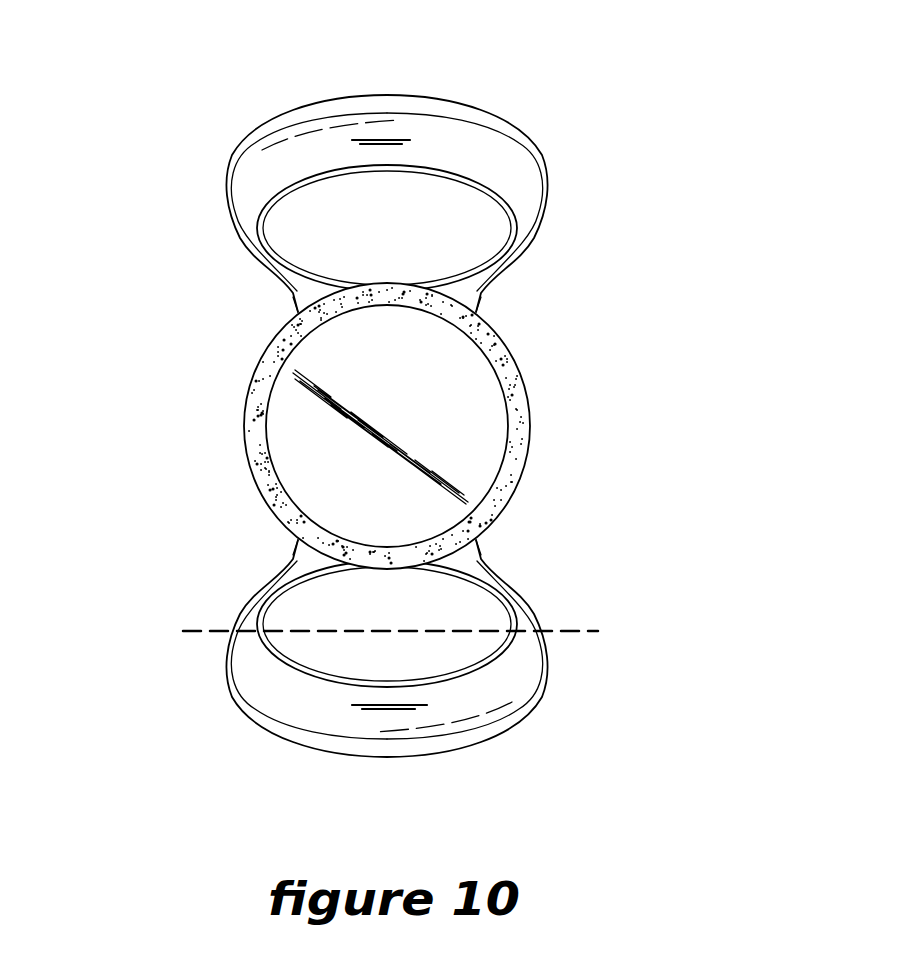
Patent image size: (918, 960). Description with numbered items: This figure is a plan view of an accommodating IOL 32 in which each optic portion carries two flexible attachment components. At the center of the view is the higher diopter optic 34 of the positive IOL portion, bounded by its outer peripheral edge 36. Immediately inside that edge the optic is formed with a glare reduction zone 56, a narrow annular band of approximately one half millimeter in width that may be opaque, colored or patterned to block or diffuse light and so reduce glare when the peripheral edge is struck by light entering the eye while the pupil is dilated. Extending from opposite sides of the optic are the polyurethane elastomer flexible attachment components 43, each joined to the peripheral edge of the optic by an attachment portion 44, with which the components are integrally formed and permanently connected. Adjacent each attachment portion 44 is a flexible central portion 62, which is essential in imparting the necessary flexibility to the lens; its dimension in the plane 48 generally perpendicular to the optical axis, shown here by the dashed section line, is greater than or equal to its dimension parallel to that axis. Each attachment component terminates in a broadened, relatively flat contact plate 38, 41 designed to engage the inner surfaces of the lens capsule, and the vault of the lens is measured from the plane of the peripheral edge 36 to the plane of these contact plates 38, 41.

The accommodating IOL 32 is at (603, 237).
The higher diopter optic 34 is at (432, 410).
The outer peripheral edge 36 is at (533, 420).
The contact plate 38 is at (395, 130).
The contact plate 41 is at (298, 108).
The flexible attachment component 43 is at (414, 98).
The attachment portion 44 is at (298, 303).
The plane 48 is at (390, 632).
The glare reduction zone 56 is at (243, 417).
The flexible central portion 62 is at (530, 212).